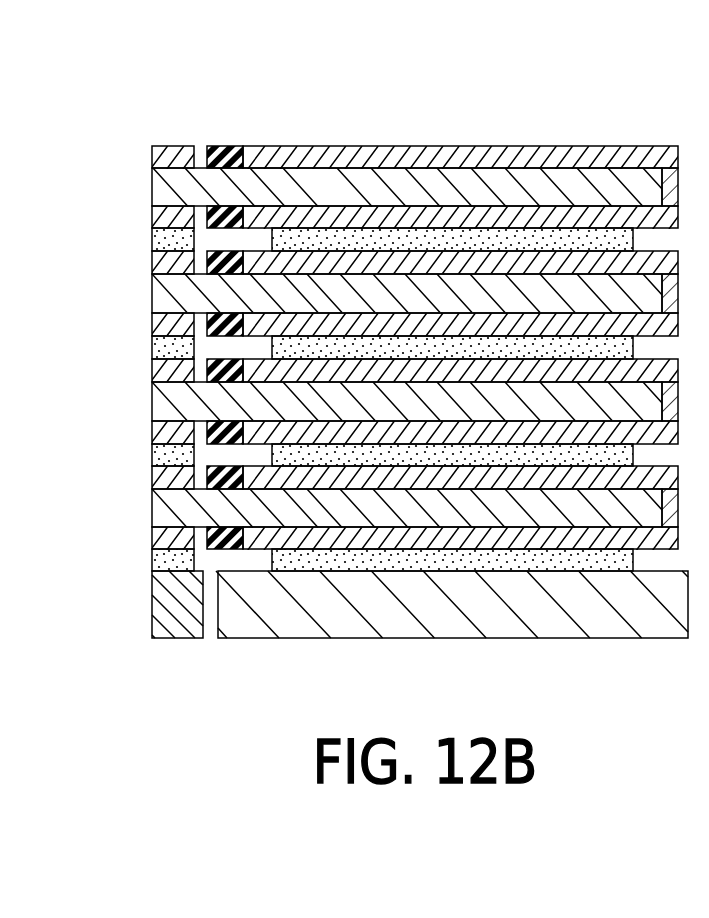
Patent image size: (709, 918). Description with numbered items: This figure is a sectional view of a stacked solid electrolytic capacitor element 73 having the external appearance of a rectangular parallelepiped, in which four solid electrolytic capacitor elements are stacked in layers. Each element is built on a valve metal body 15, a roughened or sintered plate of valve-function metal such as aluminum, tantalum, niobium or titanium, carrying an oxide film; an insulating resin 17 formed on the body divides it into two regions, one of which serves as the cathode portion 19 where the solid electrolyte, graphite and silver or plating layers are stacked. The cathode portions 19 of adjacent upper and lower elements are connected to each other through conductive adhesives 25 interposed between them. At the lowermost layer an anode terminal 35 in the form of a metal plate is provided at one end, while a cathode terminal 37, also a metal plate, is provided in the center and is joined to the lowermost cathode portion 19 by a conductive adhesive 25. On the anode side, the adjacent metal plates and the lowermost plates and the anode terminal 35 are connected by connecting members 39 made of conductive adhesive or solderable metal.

The stacked solid electrolytic capacitor element 73 is at (453, 126).
The valve metal body 15 is at (602, 507).
The cathode portion 19 is at (513, 166).
The insulating resin 17 is at (223, 146).
The conductive adhesive 25 is at (510, 557).
The connecting member 39 is at (162, 551).
The anode terminal 35 is at (183, 612).
The cathode terminal 37 is at (450, 620).